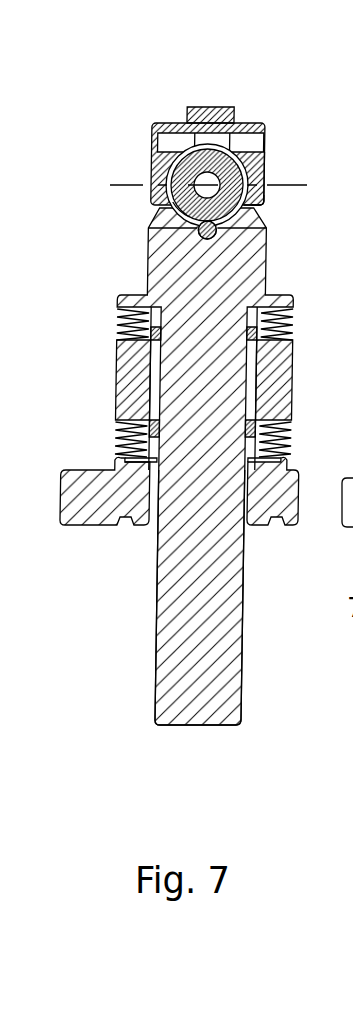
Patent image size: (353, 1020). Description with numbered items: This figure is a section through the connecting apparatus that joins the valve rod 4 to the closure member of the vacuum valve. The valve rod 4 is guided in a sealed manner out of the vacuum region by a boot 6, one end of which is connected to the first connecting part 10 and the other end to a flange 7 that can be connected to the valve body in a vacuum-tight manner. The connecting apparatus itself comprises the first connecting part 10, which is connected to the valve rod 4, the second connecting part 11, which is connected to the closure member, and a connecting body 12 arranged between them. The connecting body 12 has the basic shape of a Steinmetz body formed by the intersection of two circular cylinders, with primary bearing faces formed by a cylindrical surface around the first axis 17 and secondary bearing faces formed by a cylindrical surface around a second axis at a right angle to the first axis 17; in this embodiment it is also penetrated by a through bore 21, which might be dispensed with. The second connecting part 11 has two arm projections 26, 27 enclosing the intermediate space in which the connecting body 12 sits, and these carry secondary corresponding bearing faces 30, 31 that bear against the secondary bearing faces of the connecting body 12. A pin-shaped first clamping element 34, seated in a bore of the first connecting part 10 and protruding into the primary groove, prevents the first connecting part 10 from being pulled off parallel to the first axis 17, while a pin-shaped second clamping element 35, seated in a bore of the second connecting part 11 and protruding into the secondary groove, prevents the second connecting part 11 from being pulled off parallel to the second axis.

The valve rod 4 is at (218, 712).
The boot 6 is at (283, 437).
The flange 7 is at (83, 525).
The first connecting part 10 is at (163, 263).
The second connecting part 11 is at (201, 118).
The connecting body 12 is at (244, 166).
The first axis 17 is at (110, 185).
The through bore 21 is at (207, 184).
The arm projection 26 is at (262, 200).
The arm projection 27 is at (162, 160).
The secondary corresponding bearing face 30 is at (247, 171).
The secondary corresponding bearing face 31 is at (172, 195).
The first clamping element 34 is at (216, 232).
The second clamping element 35 is at (208, 145).